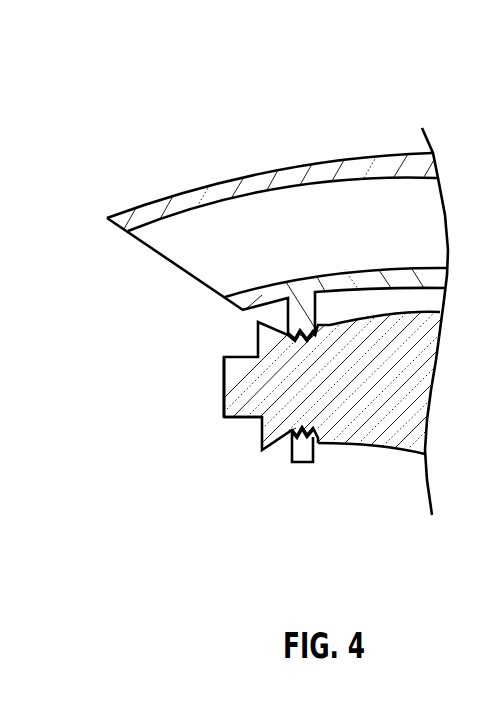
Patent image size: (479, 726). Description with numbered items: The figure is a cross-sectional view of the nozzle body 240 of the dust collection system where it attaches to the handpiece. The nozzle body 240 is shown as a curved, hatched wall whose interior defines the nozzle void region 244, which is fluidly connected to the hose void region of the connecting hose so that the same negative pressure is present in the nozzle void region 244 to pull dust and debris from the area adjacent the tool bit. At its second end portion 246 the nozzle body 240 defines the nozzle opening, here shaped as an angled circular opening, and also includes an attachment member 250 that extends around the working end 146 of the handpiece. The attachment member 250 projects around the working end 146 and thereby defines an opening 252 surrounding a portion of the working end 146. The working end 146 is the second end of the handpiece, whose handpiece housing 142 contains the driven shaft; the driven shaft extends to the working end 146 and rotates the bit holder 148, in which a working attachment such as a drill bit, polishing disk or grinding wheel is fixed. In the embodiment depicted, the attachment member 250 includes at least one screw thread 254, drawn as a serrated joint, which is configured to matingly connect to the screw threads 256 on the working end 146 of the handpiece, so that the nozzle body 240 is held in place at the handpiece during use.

The nozzle void region 244 is at (181, 158).
The nozzle body 240 is at (412, 156).
The second end portion 246 is at (166, 272).
The opening 252 is at (322, 340).
The working end 146 is at (223, 321).
The bit holder 148 is at (224, 418).
The handpiece housing 142 is at (398, 456).
The attachment member 250 is at (312, 463).
The screw thread 254 is at (301, 440).
The screw threads 256 is at (290, 426).